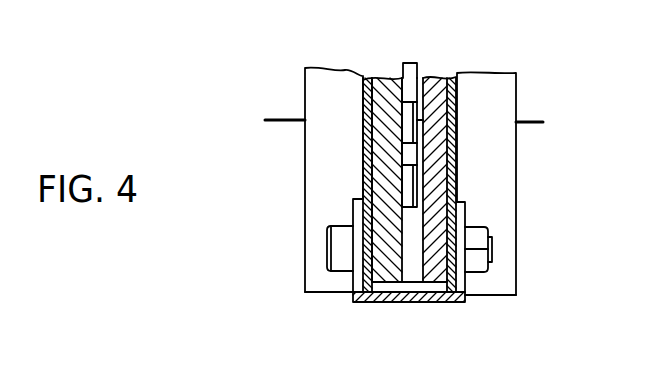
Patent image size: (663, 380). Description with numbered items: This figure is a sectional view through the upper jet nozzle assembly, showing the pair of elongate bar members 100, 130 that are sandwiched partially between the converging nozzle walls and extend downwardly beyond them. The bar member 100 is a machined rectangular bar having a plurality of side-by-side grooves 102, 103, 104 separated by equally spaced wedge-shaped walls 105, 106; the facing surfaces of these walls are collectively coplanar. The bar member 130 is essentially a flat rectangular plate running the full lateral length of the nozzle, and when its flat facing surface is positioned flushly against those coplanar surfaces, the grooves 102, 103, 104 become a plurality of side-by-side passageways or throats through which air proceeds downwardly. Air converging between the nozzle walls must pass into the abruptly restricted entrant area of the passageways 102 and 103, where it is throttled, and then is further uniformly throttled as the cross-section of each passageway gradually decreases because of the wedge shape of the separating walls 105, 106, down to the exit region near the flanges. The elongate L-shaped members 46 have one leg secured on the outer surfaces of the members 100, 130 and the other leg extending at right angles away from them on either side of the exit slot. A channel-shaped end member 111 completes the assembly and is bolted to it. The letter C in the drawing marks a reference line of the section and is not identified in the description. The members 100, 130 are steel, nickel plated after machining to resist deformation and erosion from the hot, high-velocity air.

The elongate L-shaped members 46 is at (331, 145).
The elongate bar member 100 is at (386, 96).
The machined groove 102 is at (410, 178).
The machined groove 103 is at (410, 115).
The machined groove 104 is at (412, 72).
The wedge-shaped wall 105 is at (412, 152).
The wedge-shaped wall 106 is at (413, 88).
The channel-shaped end member 111 is at (371, 296).
The elongate bar member 130 is at (433, 103).
The centerline C is at (278, 118).